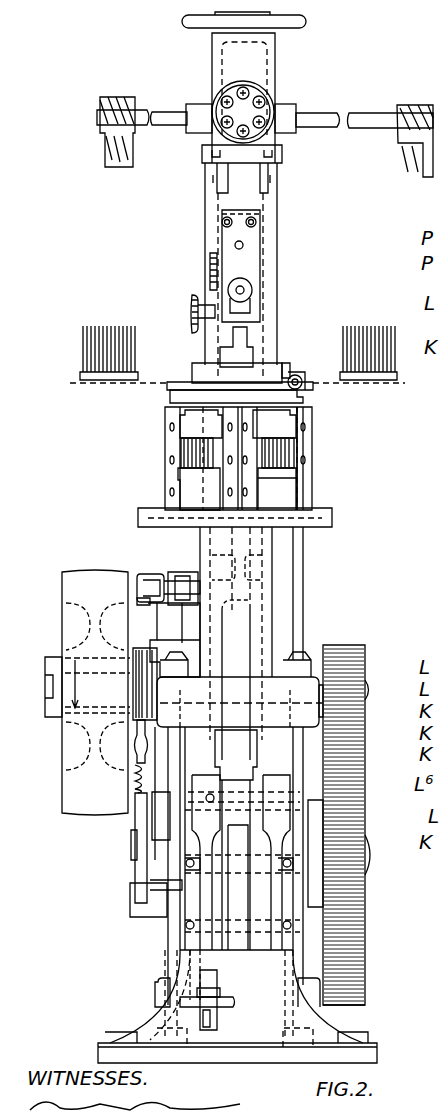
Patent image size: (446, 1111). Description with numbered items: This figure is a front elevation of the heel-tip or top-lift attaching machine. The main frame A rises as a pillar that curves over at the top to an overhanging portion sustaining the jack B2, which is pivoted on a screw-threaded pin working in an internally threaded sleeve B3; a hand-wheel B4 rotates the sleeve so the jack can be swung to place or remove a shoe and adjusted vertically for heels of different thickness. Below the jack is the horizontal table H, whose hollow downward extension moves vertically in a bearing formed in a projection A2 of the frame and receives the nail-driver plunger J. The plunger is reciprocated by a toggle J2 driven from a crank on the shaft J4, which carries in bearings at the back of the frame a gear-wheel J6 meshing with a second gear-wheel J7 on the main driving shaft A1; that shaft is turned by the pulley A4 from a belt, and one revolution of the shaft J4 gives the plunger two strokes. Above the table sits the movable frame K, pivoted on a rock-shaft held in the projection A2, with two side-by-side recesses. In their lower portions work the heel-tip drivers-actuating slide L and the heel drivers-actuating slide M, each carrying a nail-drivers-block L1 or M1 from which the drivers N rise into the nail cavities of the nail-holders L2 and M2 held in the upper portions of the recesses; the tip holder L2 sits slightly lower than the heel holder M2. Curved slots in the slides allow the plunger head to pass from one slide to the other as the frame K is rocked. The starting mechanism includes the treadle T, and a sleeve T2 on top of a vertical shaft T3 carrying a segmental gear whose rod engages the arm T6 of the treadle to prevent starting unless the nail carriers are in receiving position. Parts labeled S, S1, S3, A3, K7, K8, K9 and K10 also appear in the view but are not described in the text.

The hand-wheel B4 is at (300, 22).
The internally threaded sleeve B3 is at (235, 60).
The shaft S3 is at (360, 117).
The main frame A is at (277, 292).
The jack B2 is at (240, 262).
The base plate S1 is at (185, 385).
The support S is at (287, 378).
The sleeve T2 is at (300, 378).
The heel-tip drivers-actuating slide L is at (195, 497).
The tip nail-holder L2 is at (195, 415).
The tip nail-drivers-block L1 is at (185, 472).
The drivers N is at (385, 490).
The heel nail-holder M2 is at (285, 418).
The movable frame K is at (305, 450).
The heel drivers-actuating slide M is at (285, 478).
The heel nail-drivers-block M1 is at (275, 478).
The table H is at (330, 520).
The vertical shaft T3 is at (300, 560).
The projection from the main frame A2 is at (240, 635).
The clutch arm K10 is at (150, 582).
The clutch pin K9 is at (140, 600).
The clutch collar K7 is at (190, 585).
The bracket A3 is at (170, 623).
The clutch plates K8 is at (130, 656).
The pulley A4 is at (77, 748).
The main driving shaft A1 is at (87, 688).
The nail-driver plunger J is at (235, 743).
The gear-wheel J7 is at (345, 650).
The shaft J4 is at (366, 845).
The gear-wheel J6 is at (348, 925).
The treadle T is at (178, 1002).
The toggle J2 is at (215, 862).
The arm T6 is at (135, 888).